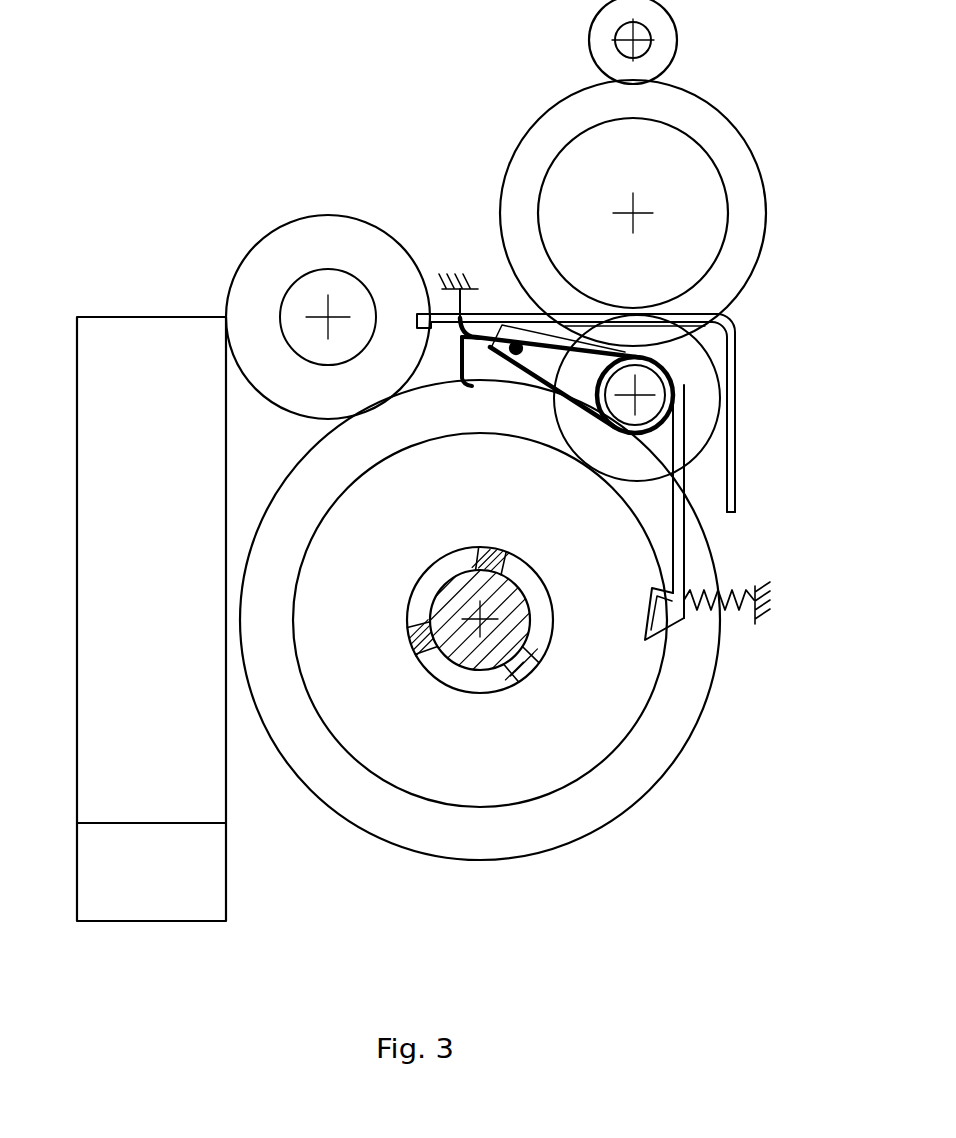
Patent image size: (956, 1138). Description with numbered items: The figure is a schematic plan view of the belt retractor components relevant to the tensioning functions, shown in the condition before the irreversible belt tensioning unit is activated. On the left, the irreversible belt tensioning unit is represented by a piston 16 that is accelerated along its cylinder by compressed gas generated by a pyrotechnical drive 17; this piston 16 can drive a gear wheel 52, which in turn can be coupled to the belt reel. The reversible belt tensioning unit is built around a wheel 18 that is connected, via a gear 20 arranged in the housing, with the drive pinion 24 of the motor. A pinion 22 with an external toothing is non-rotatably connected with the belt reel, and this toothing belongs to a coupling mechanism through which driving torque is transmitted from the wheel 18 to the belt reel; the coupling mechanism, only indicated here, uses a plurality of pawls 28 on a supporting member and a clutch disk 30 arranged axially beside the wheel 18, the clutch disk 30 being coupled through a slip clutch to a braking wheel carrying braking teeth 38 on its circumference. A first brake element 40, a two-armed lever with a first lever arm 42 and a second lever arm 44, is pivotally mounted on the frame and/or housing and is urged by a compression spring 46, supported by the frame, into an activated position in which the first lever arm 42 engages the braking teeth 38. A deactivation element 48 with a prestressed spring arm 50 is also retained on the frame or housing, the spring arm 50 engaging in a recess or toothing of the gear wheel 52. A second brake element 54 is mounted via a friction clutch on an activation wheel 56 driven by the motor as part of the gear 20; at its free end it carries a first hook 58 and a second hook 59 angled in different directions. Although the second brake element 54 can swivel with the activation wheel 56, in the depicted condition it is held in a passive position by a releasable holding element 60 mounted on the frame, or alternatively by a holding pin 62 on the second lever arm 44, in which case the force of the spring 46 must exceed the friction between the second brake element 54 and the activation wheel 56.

The piston 16 is at (90, 698).
The pyrotechnical drive 17 is at (90, 880).
The wheel 18 is at (620, 808).
The gear 20 is at (782, 178).
The pinion 22 is at (468, 670).
The drive pinion 24 is at (668, 37).
The pawls 28 is at (518, 668).
The clutch disk 30 is at (600, 718).
The braking teeth 38 is at (655, 690).
The first brake element 40 is at (688, 481).
The first lever arm 42 is at (677, 572).
The second lever arm 44 is at (567, 378).
The spring 46 is at (730, 613).
The deactivation element 48 is at (733, 443).
The spring arm 50 is at (490, 312).
The gear wheel 52 is at (258, 272).
The second brake element 54 is at (537, 353).
The activation wheel 56 is at (718, 378).
The first hook 58 is at (456, 356).
The second hook 59 is at (442, 288).
The releasable holding element 60 is at (465, 287).
The holding pin 62 is at (513, 353).